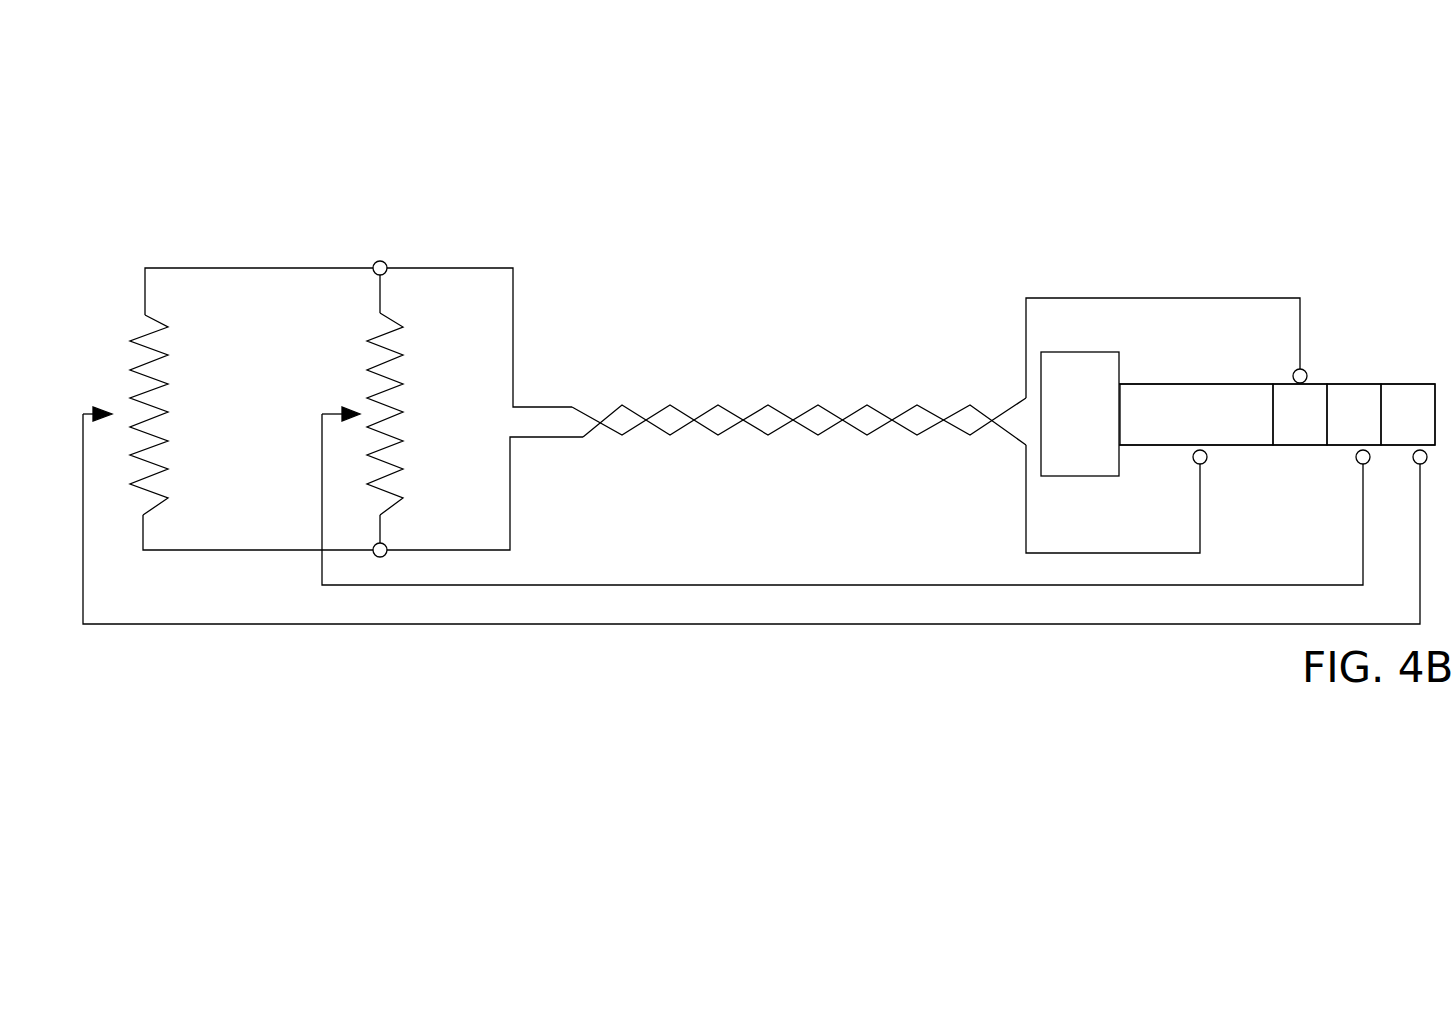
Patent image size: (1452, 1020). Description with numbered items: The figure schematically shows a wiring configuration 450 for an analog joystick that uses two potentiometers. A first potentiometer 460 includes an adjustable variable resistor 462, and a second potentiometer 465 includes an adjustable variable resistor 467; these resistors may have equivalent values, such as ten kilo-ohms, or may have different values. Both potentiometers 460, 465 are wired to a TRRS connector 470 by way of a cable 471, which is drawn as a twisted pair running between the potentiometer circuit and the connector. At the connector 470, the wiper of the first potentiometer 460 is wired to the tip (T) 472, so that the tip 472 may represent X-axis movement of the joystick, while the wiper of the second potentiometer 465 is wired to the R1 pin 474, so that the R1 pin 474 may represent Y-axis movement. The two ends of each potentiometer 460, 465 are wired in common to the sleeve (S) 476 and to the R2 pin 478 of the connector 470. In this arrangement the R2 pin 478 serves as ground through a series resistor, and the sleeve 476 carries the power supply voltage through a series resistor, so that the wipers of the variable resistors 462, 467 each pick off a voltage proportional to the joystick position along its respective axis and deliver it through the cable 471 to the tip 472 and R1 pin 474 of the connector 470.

The wiring configuration 450 is at (203, 103).
The potentiometer 460 is at (186, 220).
The adjustable variable resistor 462 is at (190, 387).
The potentiometer 465 is at (440, 231).
The adjustable variable resistor 467 is at (430, 404).
The TRRS connector 470 is at (1297, 191).
The cable 471 is at (769, 363).
The tip (T) 472 is at (1408, 414).
The R1 pin 474 is at (1354, 414).
The sleeve (S) 476 is at (1196, 414).
The R2 pin 478 is at (1300, 414).